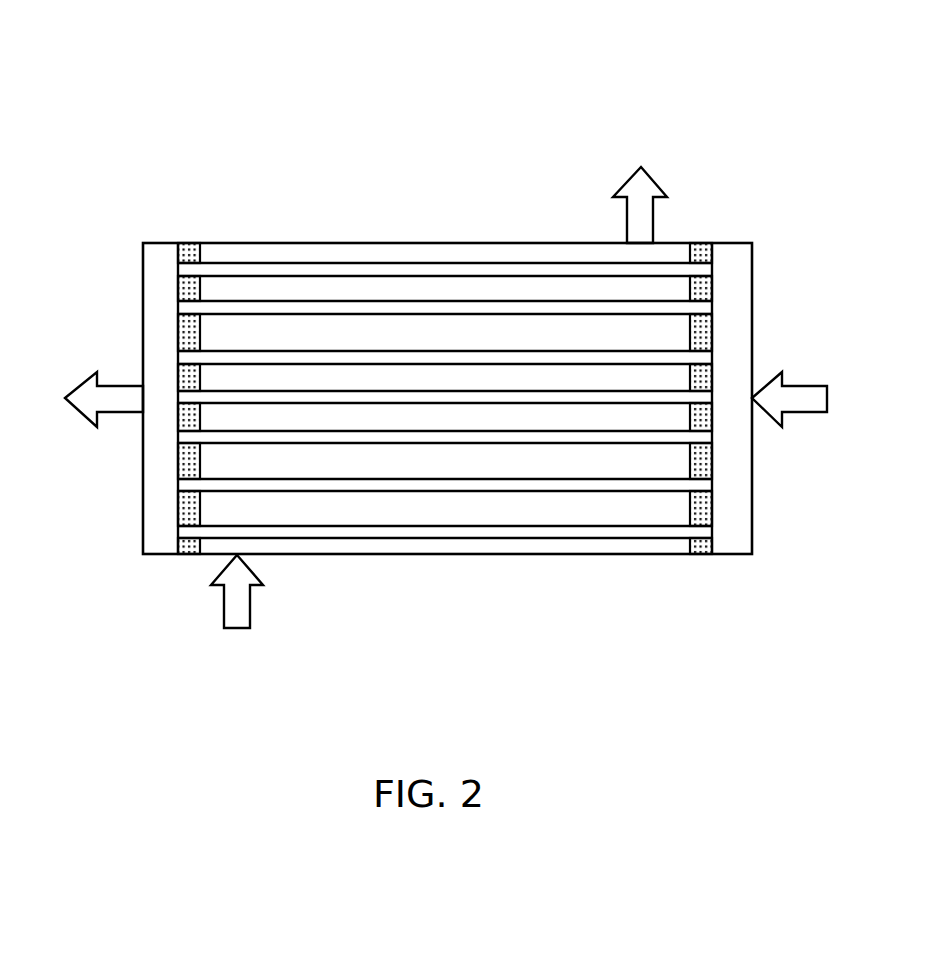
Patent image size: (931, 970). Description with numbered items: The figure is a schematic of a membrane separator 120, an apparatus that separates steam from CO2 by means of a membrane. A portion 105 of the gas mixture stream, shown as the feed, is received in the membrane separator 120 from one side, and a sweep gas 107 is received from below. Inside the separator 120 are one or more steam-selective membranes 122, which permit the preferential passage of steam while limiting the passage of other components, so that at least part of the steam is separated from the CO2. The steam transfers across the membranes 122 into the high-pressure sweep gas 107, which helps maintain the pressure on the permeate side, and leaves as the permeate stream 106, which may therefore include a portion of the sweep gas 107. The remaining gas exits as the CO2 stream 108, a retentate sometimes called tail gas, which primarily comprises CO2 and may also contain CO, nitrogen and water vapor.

The membrane separator 120 is at (714, 45).
The steam-selective membranes 122 is at (523, 443).
The portion of the gas mixture stream 105 is at (803, 385).
The permeate stream 106 is at (657, 181).
The sweep gas 107 is at (238, 629).
The CO2 stream 108 is at (118, 385).